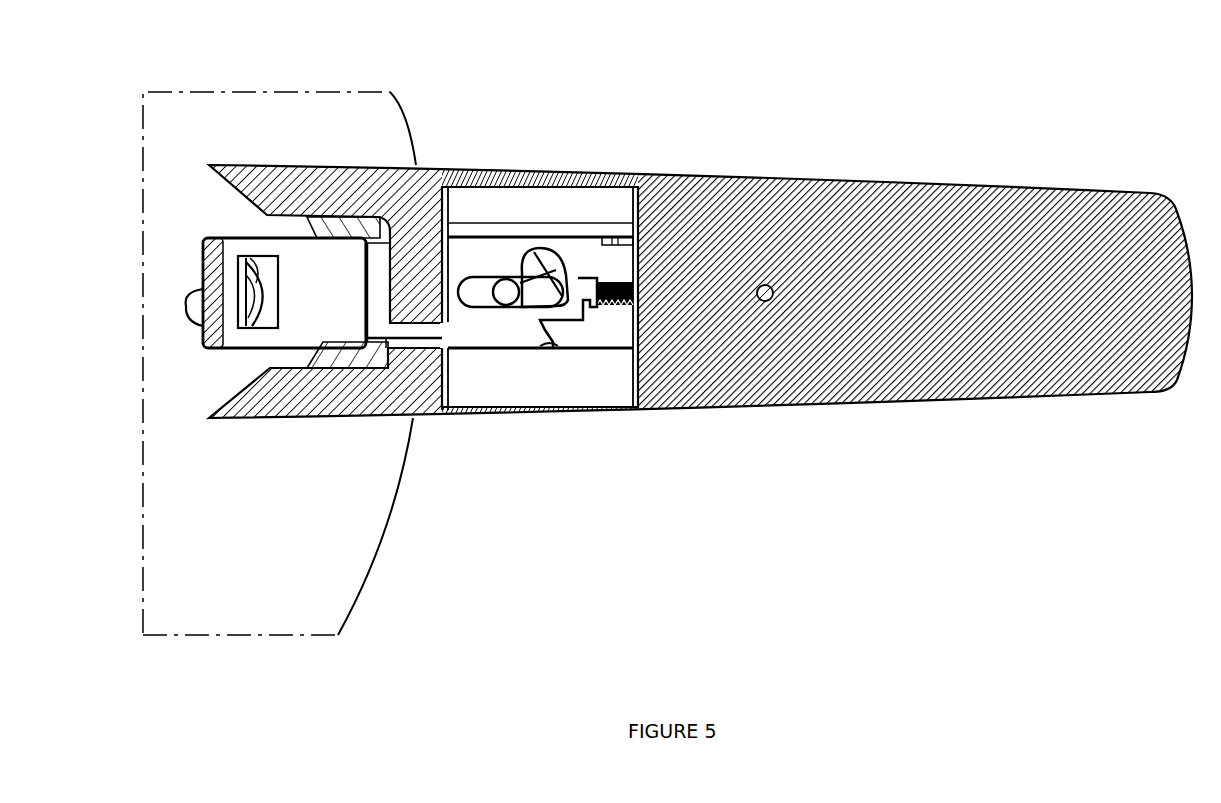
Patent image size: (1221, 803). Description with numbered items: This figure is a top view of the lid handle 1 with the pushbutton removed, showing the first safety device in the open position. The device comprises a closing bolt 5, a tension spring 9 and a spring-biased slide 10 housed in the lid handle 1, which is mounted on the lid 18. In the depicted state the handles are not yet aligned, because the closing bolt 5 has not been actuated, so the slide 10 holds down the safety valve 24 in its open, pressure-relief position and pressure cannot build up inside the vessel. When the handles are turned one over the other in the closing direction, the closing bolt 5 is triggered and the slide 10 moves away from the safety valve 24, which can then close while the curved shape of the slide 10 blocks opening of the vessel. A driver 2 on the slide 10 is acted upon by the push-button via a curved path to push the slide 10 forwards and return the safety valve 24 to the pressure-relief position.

The lid handle 1 is at (942, 403).
The driver on the slide 2 is at (555, 348).
The closing bolt 5 is at (548, 250).
The tension spring 9 is at (688, 172).
The slide 10 is at (262, 257).
The lid 18 is at (375, 565).
The safety valve 24 is at (188, 305).